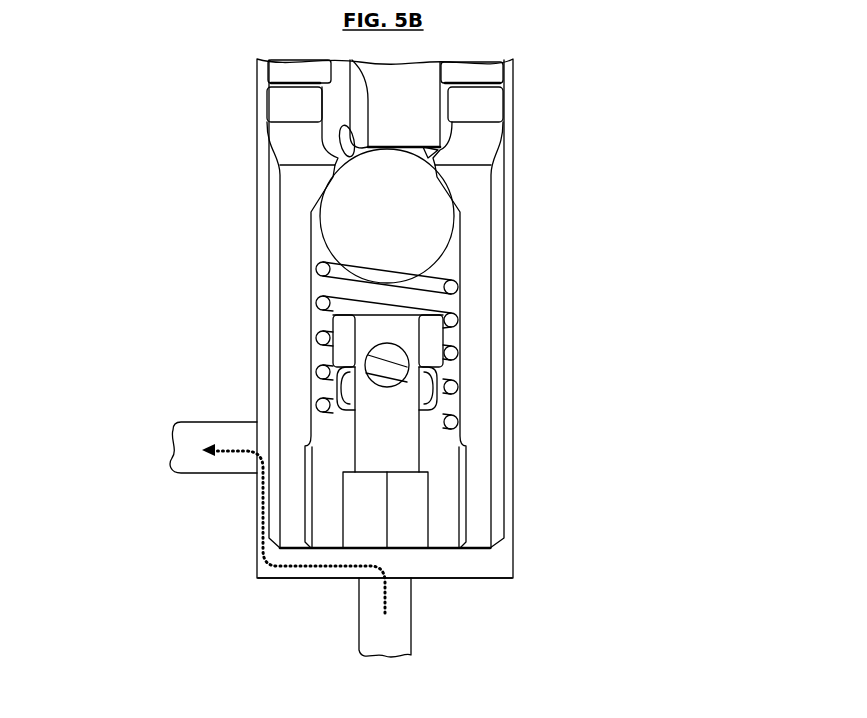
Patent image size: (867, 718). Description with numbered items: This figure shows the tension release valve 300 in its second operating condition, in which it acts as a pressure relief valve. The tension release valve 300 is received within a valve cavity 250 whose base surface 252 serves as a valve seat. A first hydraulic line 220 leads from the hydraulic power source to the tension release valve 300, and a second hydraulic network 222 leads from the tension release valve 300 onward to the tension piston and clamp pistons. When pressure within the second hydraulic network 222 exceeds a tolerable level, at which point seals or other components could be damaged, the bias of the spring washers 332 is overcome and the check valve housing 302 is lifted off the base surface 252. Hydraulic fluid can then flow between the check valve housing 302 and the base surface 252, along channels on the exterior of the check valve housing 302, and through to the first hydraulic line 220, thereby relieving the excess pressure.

The tension release valve 300 is at (573, 121).
The spring washers 332 is at (262, 77).
The check valve housing 302 is at (498, 367).
The valve cavity 250 is at (520, 477).
The base surface 252 is at (466, 591).
The first hydraulic line 220 is at (172, 450).
The second hydraulic network 222 is at (358, 643).